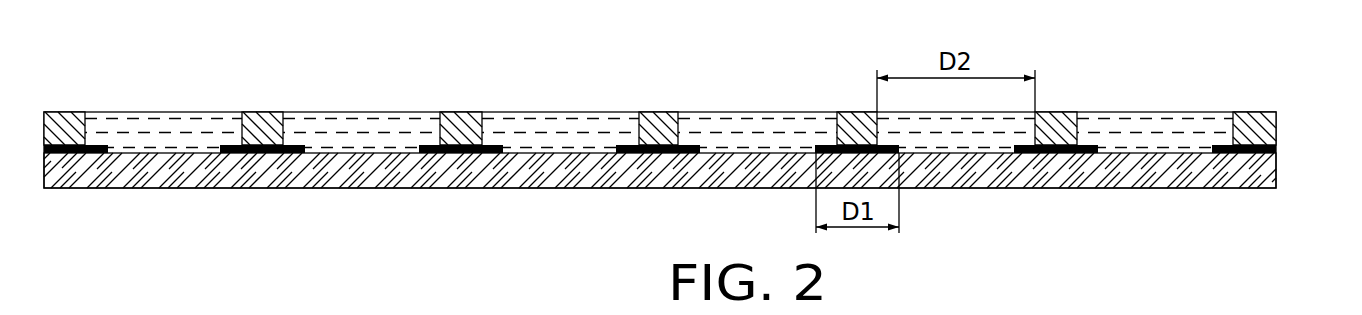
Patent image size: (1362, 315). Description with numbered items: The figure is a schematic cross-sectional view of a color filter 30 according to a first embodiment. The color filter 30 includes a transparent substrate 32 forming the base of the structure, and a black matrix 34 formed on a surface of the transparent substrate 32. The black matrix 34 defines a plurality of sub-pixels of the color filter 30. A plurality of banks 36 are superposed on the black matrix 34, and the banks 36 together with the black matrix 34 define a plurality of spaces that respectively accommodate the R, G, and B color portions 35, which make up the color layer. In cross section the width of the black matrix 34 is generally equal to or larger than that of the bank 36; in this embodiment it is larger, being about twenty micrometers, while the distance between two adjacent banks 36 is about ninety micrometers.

The color filter 30 is at (704, 41).
The transparent substrate 32 is at (1265, 178).
The black matrix 34 is at (1276, 148).
The color portions 35 is at (1112, 122).
The bank 36 is at (1250, 128).